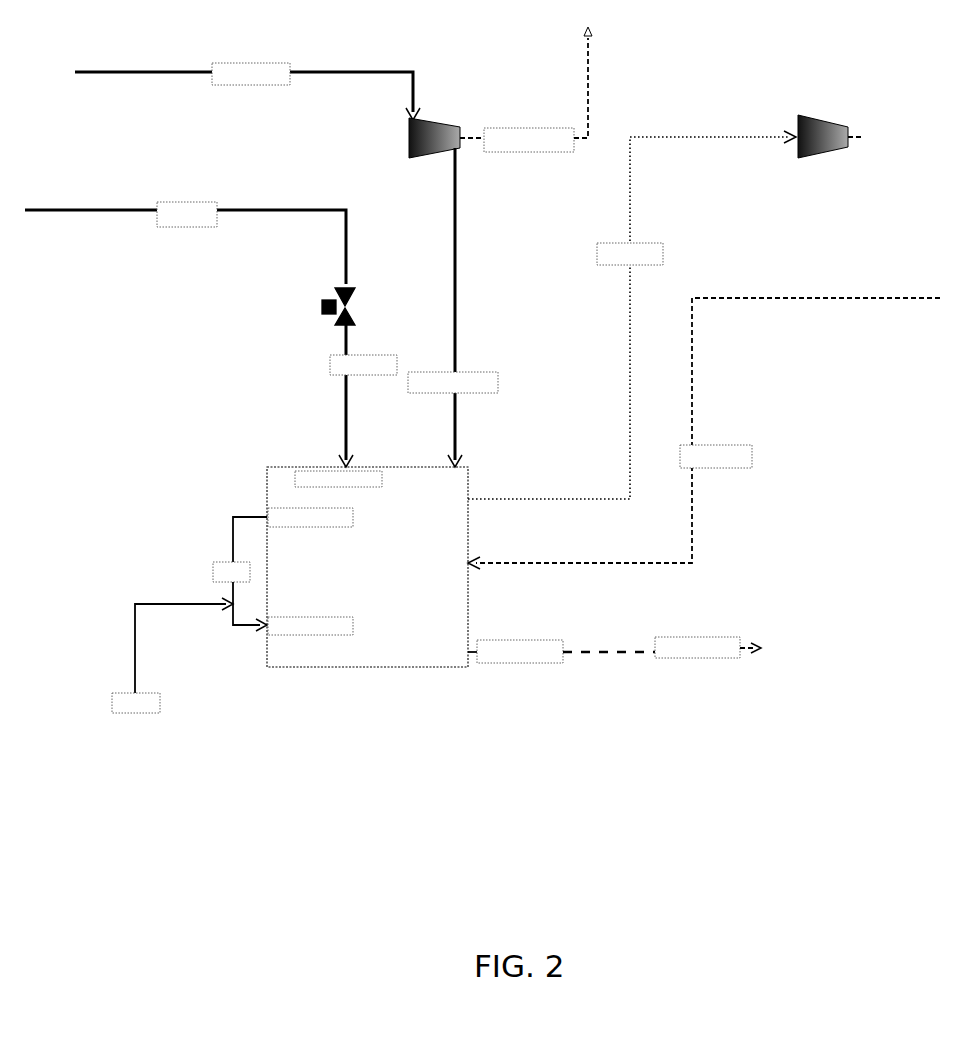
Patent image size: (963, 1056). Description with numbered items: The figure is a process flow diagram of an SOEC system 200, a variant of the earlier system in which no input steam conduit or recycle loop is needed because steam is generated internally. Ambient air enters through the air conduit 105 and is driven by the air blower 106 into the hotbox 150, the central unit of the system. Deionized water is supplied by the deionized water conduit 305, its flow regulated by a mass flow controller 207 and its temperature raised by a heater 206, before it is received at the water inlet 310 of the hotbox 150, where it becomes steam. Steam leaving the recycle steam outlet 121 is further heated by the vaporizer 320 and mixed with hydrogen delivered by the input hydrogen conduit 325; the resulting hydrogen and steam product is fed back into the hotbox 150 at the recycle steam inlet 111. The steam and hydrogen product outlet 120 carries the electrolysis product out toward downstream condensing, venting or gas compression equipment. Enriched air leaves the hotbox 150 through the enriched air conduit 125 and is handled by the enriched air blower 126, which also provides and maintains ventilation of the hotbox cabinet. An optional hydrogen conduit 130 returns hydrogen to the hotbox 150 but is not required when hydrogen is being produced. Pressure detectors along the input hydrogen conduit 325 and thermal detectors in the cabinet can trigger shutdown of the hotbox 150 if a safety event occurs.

The SOEC system 200 is at (482, 519).
The air conduit 105 is at (247, 81).
The air blower 106 is at (486, 241).
The deionized water conduit 305 is at (185, 233).
The mass flow controller 207 is at (355, 306).
The heater 206 is at (363, 396).
The water inlet 310 is at (355, 479).
The recycle steam outlet 121 is at (310, 535).
The vaporizer 320 is at (231, 587).
The recycle steam inlet 111 is at (327, 626).
The input hydrogen conduit 325 is at (172, 655).
The hotbox 150 is at (367, 567).
The steam and hydrogen product outlet 120 is at (471, 645).
The enriched air conduit 125 is at (632, 310).
The enriched air blower 126 is at (830, 129).
The hydrogen conduit 130 is at (704, 425).